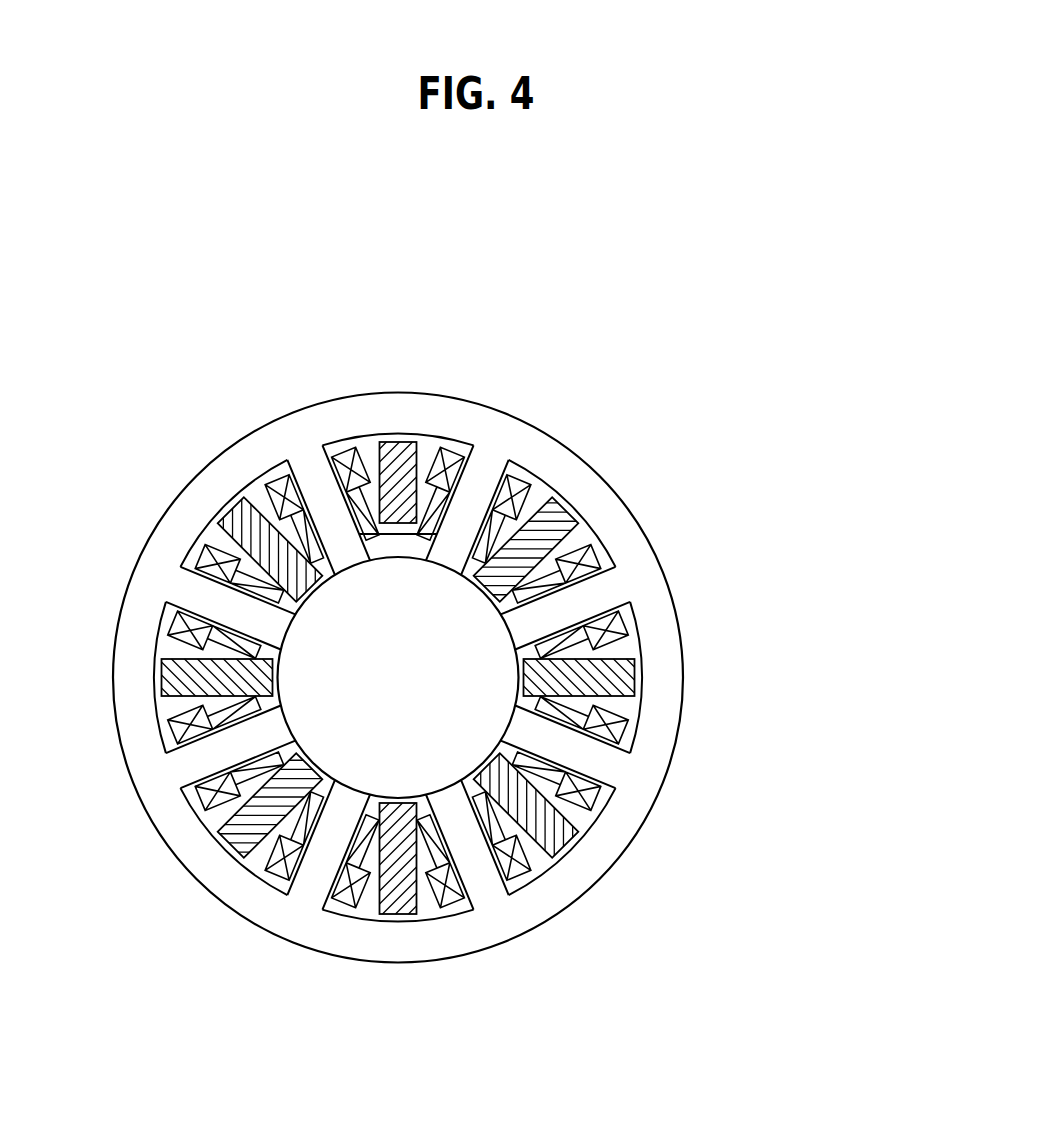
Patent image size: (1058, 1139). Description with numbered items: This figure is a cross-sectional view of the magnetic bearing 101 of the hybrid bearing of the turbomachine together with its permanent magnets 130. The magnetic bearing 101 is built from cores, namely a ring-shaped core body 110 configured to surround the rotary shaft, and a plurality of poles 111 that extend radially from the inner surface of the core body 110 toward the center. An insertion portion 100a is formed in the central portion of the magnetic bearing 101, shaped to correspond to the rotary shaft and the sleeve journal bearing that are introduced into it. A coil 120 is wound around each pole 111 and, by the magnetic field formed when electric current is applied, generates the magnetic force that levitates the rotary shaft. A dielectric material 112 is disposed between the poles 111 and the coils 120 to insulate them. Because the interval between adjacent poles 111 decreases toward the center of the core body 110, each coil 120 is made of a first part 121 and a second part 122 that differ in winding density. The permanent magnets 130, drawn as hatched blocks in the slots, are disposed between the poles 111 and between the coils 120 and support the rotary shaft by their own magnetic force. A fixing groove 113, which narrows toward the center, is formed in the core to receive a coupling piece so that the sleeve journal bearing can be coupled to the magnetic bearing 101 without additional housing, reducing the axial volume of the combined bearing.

The magnetic bearing 101 is at (517, 674).
The core body 110 is at (603, 500).
The pole 111 is at (598, 592).
The dielectric material 112 is at (607, 541).
The fixing groove 113 is at (400, 536).
The coil 120 is at (694, 677).
The first part of the coil 121 is at (617, 628).
The second part of the coil 122 is at (630, 705).
The permanent magnet 130 is at (551, 838).
The insertion portion 100a is at (376, 686).